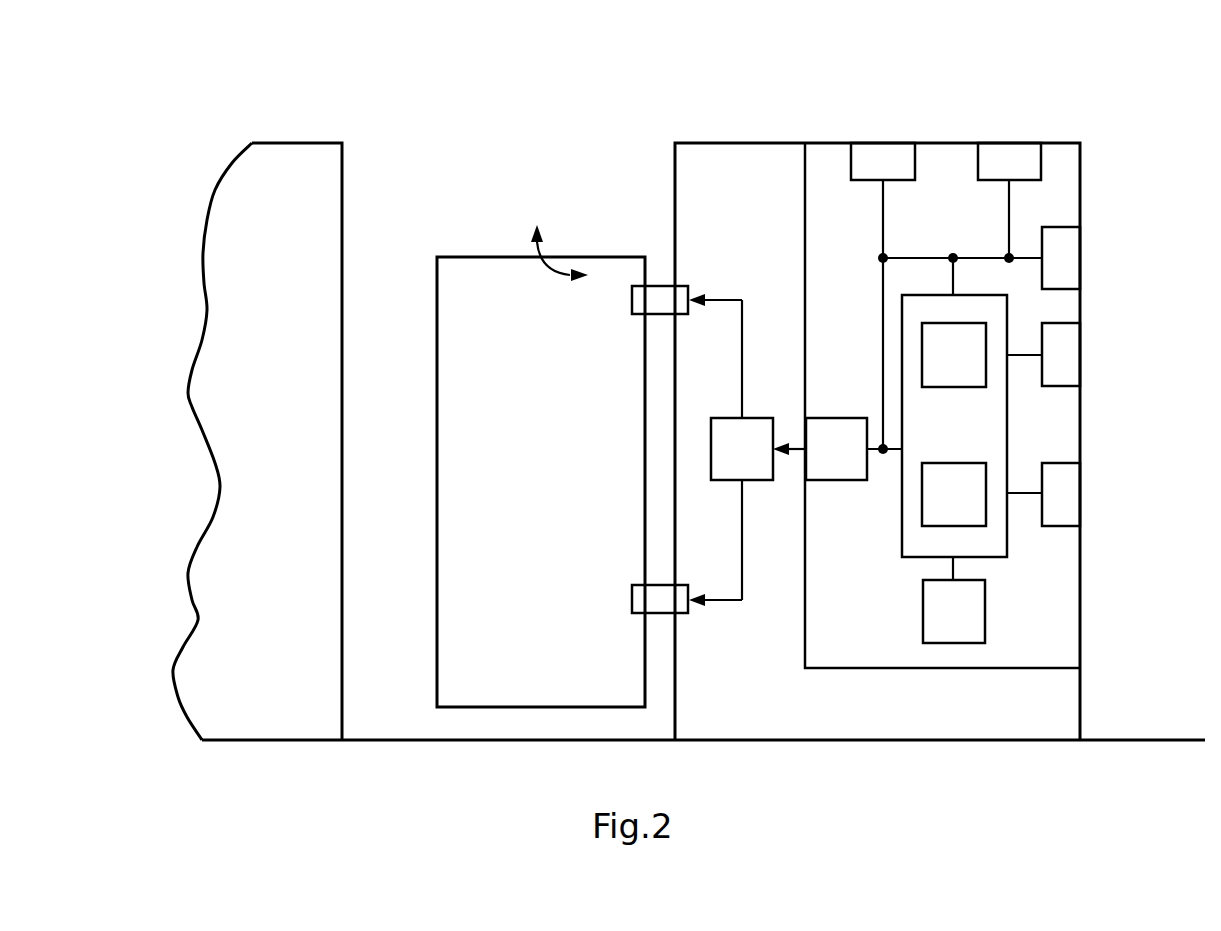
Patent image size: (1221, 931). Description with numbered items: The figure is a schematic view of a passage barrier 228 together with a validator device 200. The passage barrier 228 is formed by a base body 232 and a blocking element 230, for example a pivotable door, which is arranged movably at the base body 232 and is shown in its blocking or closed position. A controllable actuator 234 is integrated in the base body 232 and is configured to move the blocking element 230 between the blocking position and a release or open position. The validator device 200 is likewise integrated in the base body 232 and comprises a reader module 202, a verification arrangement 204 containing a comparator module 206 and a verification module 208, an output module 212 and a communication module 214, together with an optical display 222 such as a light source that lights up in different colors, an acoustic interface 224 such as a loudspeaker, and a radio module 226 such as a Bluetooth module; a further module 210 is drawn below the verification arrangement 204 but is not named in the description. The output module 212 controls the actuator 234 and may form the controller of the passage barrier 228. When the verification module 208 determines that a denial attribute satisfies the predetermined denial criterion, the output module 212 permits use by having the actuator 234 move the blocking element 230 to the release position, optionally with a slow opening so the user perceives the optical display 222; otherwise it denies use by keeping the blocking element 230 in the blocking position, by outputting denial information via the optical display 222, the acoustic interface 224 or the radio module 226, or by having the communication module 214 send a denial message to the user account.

The validator device 200 is at (1062, 653).
The reader module 202 is at (1065, 254).
The verification arrangement 204 is at (934, 442).
The comparator module 206 is at (934, 367).
The verification module 208 is at (934, 506).
The storage / additional module 210 is at (934, 624).
The output module 212 is at (816, 461).
The communication module of the validator device 214 is at (1067, 352).
The optical display 222 is at (989, 172).
The acoustic interface 224 is at (863, 172).
The radio module 226 is at (1067, 490).
The passage barrier 228 is at (584, 120).
The blocking element 230 is at (485, 278).
The base body 232 is at (1063, 700).
The actuator 234 is at (722, 461).